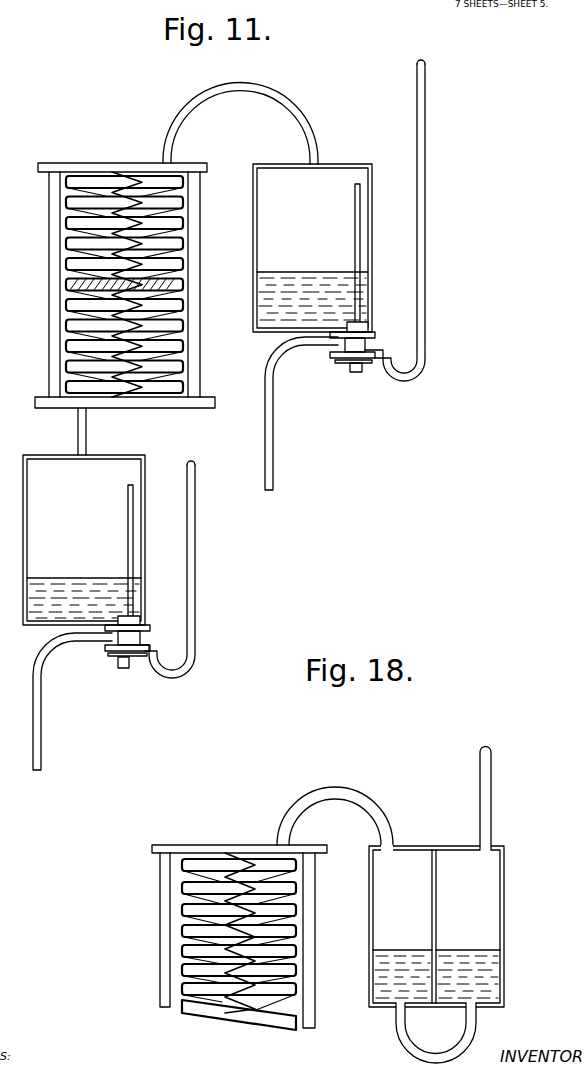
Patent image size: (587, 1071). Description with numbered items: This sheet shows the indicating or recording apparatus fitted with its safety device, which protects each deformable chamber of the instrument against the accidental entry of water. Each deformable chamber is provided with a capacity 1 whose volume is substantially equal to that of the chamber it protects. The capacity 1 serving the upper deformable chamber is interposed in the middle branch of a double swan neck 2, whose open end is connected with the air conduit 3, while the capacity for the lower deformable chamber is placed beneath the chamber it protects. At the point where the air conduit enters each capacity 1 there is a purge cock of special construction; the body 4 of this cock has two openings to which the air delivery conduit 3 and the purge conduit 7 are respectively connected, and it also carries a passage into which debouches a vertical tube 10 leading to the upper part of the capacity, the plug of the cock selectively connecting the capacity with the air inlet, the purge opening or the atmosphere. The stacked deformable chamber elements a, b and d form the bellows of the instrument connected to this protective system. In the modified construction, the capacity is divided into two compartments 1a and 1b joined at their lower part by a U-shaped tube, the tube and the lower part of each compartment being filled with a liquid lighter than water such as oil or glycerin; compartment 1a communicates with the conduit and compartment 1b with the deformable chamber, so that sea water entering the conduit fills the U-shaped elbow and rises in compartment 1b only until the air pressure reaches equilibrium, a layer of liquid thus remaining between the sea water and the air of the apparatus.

In FIG. 11, the capacity 1 is at (197, 394).
In FIG. 18, the compartment 1a is at (468, 921).
In FIG. 18, the compartment 1b is at (436, 926).
In FIG. 11, the double swan neck 2 is at (265, 97).
In FIG. 18, the double swan neck 2 is at (351, 795).
In FIG. 11, the air conduit 3 is at (426, 79).
In FIG. 18, the air conduit 3 is at (493, 767).
In FIG. 11, the body of the purge cock 4 is at (358, 362).
In FIG. 11, the purge conduit 7 is at (268, 436).
In FIG. 11, the vertical tube 10 is at (361, 226).
In FIG. 11, the bellows disc a is at (62, 212).
In FIG. 18, the bellows disc a is at (180, 889).
In FIG. 11, the bellows disc b is at (62, 358).
In FIG. 18, the bellows disc b is at (180, 992).
In FIG. 11, the bellows fold d is at (183, 223).
In FIG. 18, the bellows fold d is at (296, 901).